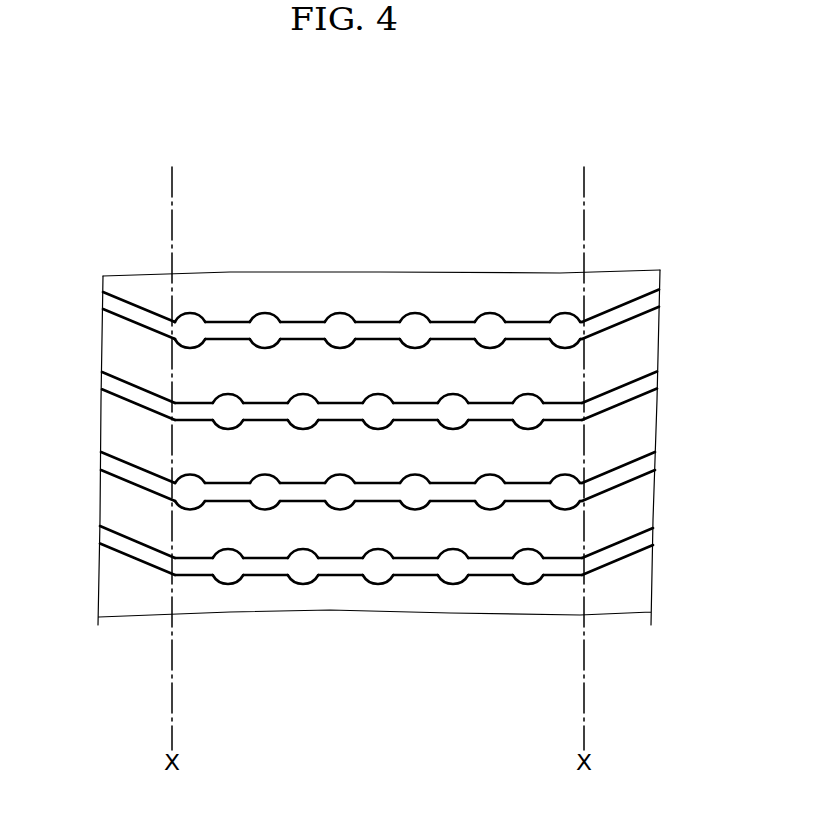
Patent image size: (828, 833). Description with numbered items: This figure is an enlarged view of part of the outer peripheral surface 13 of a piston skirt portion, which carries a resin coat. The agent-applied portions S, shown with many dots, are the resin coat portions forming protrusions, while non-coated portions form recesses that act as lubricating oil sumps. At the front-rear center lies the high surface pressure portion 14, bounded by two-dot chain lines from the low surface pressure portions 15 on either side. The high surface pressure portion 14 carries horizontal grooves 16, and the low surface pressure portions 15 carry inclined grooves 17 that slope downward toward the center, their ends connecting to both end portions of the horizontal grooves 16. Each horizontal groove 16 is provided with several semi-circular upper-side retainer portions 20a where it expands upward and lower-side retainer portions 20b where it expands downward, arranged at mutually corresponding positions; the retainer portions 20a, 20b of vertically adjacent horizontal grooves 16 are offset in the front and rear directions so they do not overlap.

The outer peripheral surface 13 is at (120, 430).
The high surface pressure portion 14 is at (313, 280).
The low surface pressure portion 15 is at (128, 292).
The horizontal groove 16 is at (330, 575).
The inclined groove 17 is at (125, 470).
The upper-side retainer portion 20a is at (273, 315).
The lower-side retainer portion 20b is at (253, 340).
The agent-applied portion S is at (216, 586).